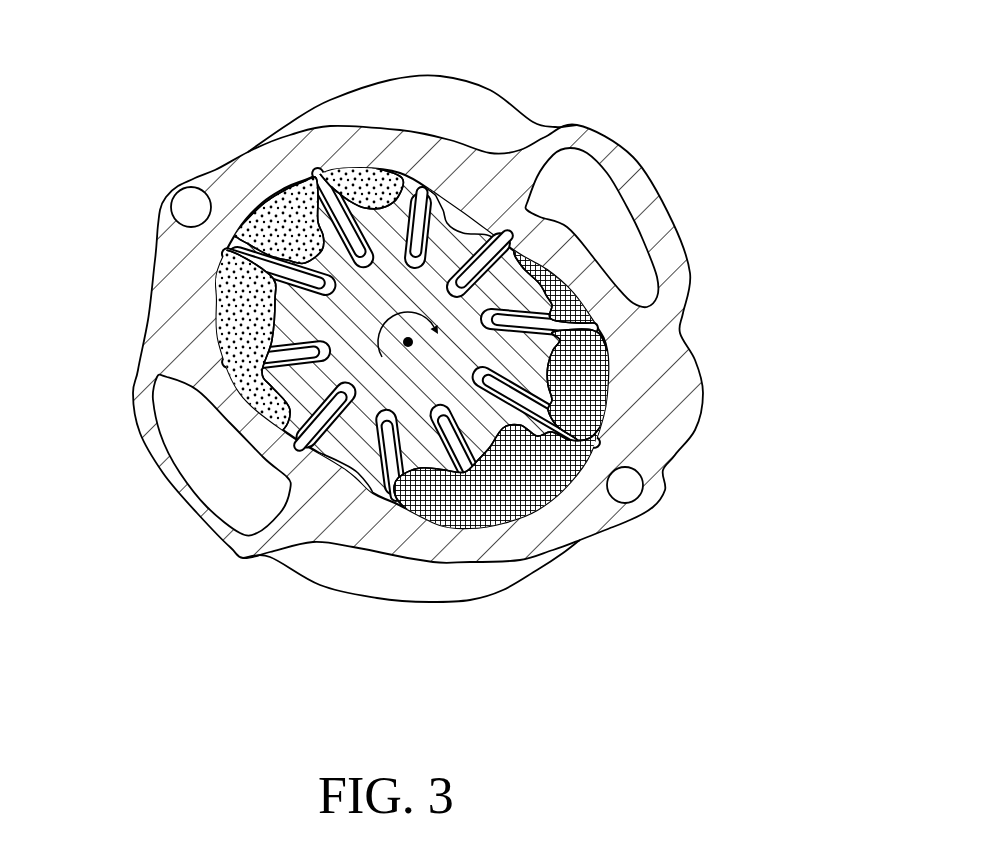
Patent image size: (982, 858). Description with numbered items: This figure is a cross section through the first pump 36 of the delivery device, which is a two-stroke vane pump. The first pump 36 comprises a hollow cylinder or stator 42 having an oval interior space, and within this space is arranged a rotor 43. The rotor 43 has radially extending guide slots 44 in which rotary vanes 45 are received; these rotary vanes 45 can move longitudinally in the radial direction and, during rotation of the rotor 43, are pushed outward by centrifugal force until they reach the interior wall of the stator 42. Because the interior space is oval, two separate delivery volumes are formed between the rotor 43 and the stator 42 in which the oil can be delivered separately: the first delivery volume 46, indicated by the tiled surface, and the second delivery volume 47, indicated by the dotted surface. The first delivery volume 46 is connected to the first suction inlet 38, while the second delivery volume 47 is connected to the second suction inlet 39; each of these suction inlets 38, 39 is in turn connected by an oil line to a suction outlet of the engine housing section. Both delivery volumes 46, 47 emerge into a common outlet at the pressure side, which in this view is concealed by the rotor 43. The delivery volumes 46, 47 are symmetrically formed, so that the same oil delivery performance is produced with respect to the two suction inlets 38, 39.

The first pump 36 is at (762, 210).
The first suction inlet 38 is at (600, 218).
The second suction inlet 39 is at (223, 474).
The stator 42 is at (428, 130).
The rotor 43 is at (287, 217).
The guide slots 44 is at (493, 383).
The rotary vanes 45 is at (560, 475).
The first delivery volume 46 is at (612, 378).
The second delivery volume 47 is at (215, 305).